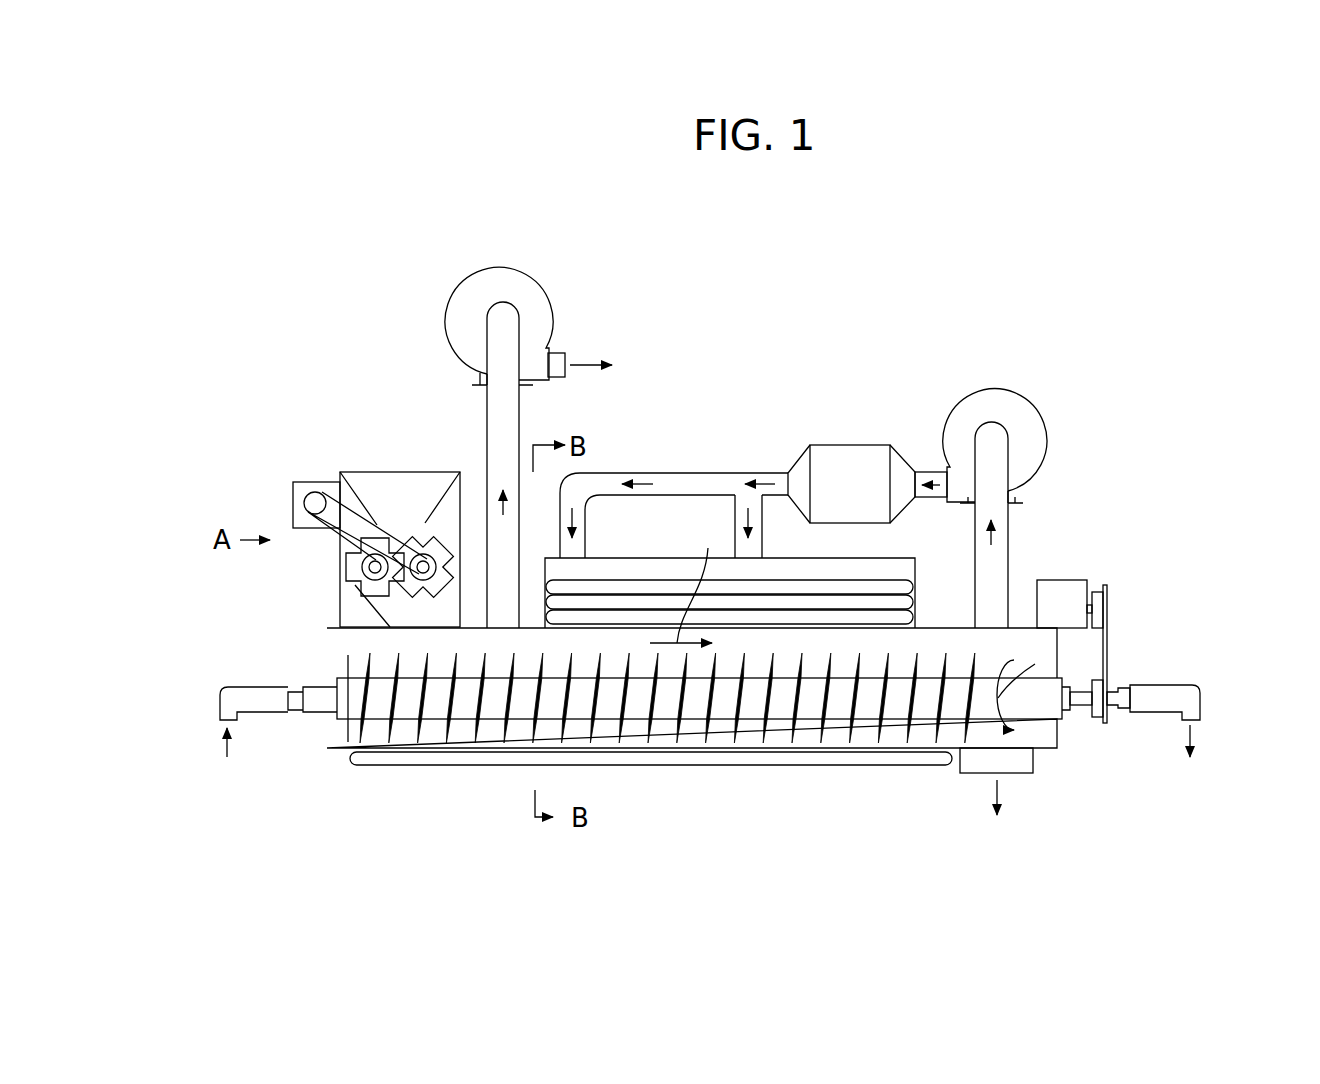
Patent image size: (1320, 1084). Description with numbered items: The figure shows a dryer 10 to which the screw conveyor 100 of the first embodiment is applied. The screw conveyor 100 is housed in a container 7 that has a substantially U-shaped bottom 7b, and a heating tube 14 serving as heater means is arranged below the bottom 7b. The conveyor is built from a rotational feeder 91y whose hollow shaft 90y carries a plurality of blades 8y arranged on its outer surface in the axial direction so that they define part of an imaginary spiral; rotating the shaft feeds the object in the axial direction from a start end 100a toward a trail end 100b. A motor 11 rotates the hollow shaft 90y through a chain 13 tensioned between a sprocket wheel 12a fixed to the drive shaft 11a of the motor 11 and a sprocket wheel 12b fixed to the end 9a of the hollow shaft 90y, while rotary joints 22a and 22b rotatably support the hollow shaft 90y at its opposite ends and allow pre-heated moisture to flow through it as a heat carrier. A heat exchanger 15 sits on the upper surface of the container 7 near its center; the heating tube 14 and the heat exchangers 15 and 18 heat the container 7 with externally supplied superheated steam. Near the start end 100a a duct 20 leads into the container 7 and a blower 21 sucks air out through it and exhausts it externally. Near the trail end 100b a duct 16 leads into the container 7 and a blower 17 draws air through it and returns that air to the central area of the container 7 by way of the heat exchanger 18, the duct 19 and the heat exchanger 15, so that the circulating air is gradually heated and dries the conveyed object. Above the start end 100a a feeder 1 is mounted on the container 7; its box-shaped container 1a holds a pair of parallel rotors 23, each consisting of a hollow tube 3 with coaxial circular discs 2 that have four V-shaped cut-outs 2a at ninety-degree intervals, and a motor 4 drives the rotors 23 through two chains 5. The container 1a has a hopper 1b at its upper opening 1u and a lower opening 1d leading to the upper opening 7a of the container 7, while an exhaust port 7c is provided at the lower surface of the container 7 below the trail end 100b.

The feeder 1 is at (382, 448).
The box-shaped container 1a is at (362, 478).
The upper opening 1u is at (392, 480).
The hopper 1b is at (366, 500).
The lower opening 1d is at (443, 623).
The circular disc 2 is at (430, 552).
The cut-out 2a is at (448, 565).
The hollow tube 3 is at (432, 558).
The motor 4 is at (298, 492).
The chain 5 is at (337, 505).
The rotor 23 is at (344, 578).
The container 7 is at (945, 622).
The upper opening 7a is at (418, 630).
The bottom 7b is at (725, 750).
The exhaust port 7c is at (975, 774).
The blade 8y is at (478, 730).
The end of hollow shaft 9a is at (1082, 707).
The dryer 10 is at (770, 292).
The motor 11 is at (1060, 588).
The drive shaft 11a is at (1090, 603).
The sprocket wheel 12a is at (1100, 608).
The sprocket wheel 12b is at (1098, 705).
The chain 13 is at (1108, 655).
The heating tube 14 is at (490, 766).
The heat exchanger 15 is at (657, 573).
The duct 16 is at (1000, 535).
The blower 17 is at (1000, 398).
The heat exchanger 18 is at (852, 452).
The duct 19 is at (697, 476).
The duct 20 is at (512, 405).
The blower 21 is at (510, 282).
The rotary joint 22a is at (222, 703).
The rotary joint 22b is at (1190, 700).
The hollow shaft 90y is at (1033, 705).
The rotational feeder 91y is at (787, 653).
The screw conveyor 100 is at (775, 748).
The start end 100a is at (355, 708).
The trail end 100b is at (1028, 728).